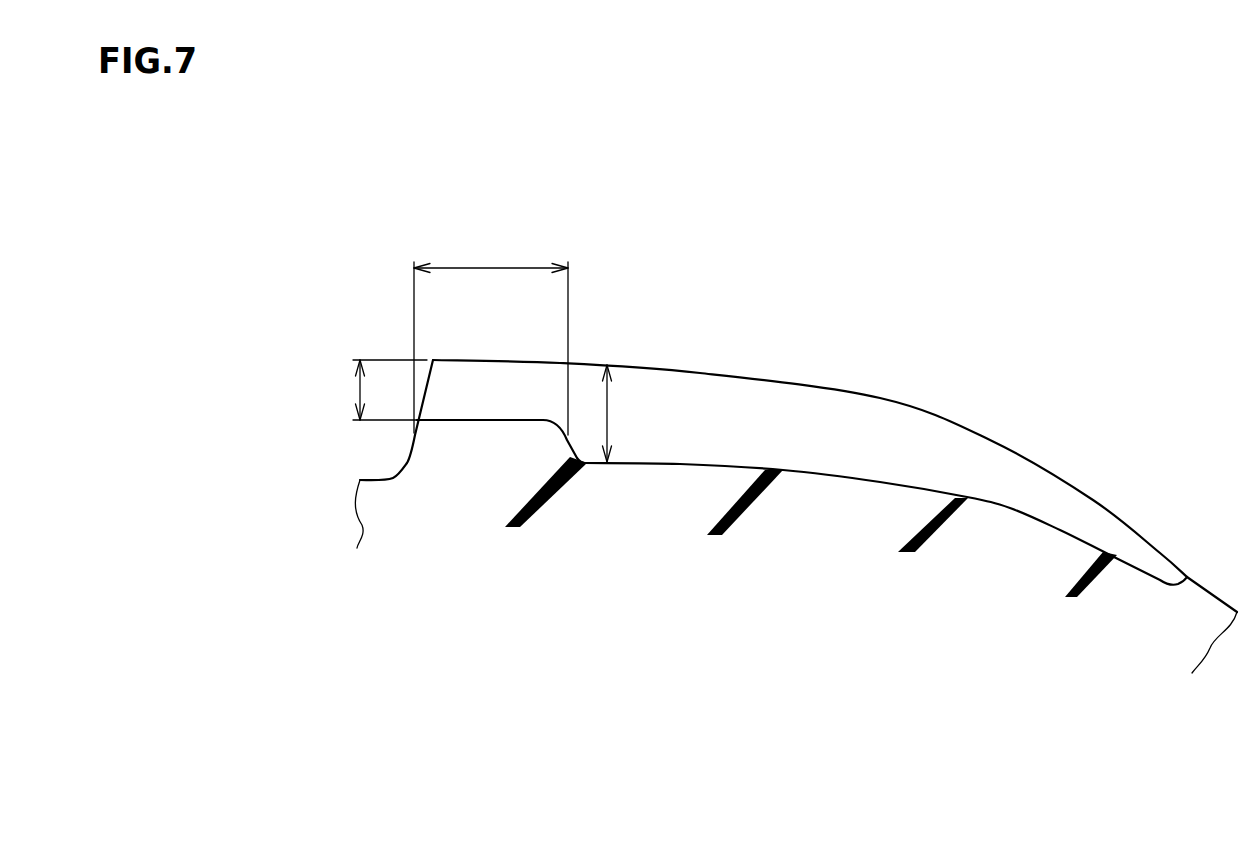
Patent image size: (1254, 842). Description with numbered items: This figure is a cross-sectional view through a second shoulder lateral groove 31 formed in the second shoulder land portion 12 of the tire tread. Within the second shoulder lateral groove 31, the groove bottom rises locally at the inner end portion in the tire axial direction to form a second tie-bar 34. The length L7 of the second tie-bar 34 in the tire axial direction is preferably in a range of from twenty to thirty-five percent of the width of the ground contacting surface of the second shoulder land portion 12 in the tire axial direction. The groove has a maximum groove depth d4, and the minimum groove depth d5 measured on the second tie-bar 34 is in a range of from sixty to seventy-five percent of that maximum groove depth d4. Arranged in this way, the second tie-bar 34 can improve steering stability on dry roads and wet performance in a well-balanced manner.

The second shoulder land portion 12 is at (695, 363).
The second shoulder lateral groove 31 is at (685, 422).
The second tie-bar 34 is at (502, 418).
The maximum groove depth d4 is at (607, 412).
The minimum groove depth d5 is at (372, 390).
The length L7 is at (491, 334).